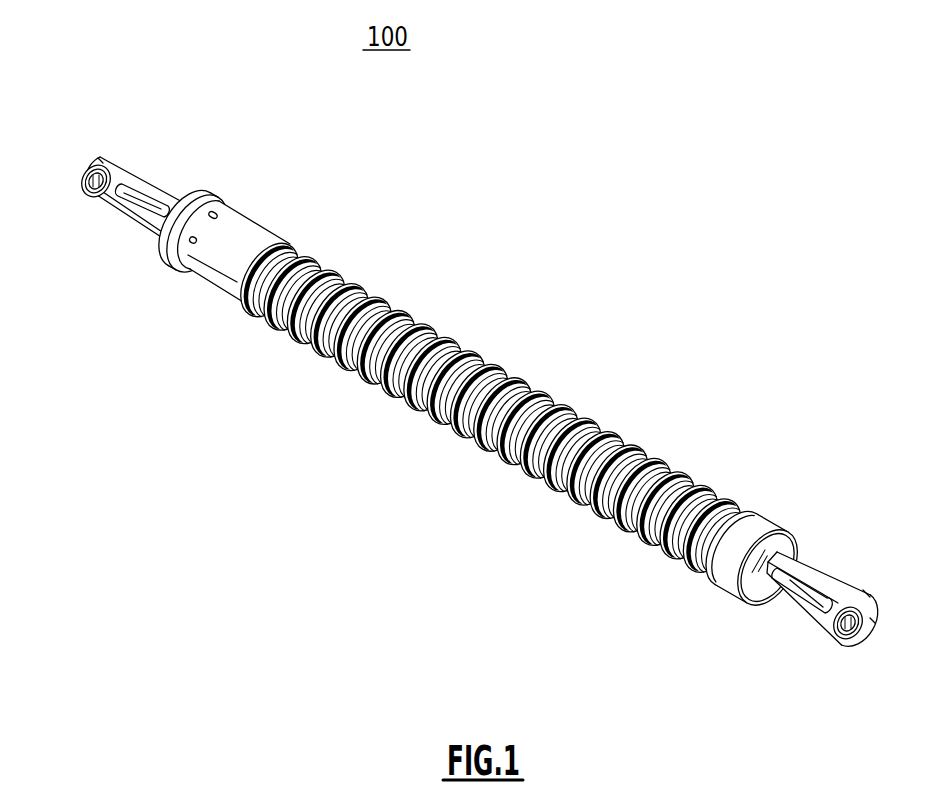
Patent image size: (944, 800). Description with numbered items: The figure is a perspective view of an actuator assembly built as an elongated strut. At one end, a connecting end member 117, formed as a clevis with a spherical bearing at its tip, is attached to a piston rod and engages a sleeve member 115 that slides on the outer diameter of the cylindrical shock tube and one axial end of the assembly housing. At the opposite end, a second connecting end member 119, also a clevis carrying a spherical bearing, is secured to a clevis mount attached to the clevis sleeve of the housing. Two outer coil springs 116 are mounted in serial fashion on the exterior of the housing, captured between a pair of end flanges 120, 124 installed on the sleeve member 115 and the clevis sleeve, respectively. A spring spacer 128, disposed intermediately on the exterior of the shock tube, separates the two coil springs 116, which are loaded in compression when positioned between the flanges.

The sleeve member 115 is at (256, 228).
The outer coil springs 116 is at (502, 414).
The connecting end member 117 is at (153, 183).
The connecting end member 119 is at (824, 571).
The end flange 120 is at (288, 238).
The end flange 124 is at (775, 522).
The spring spacer 128 is at (523, 378).